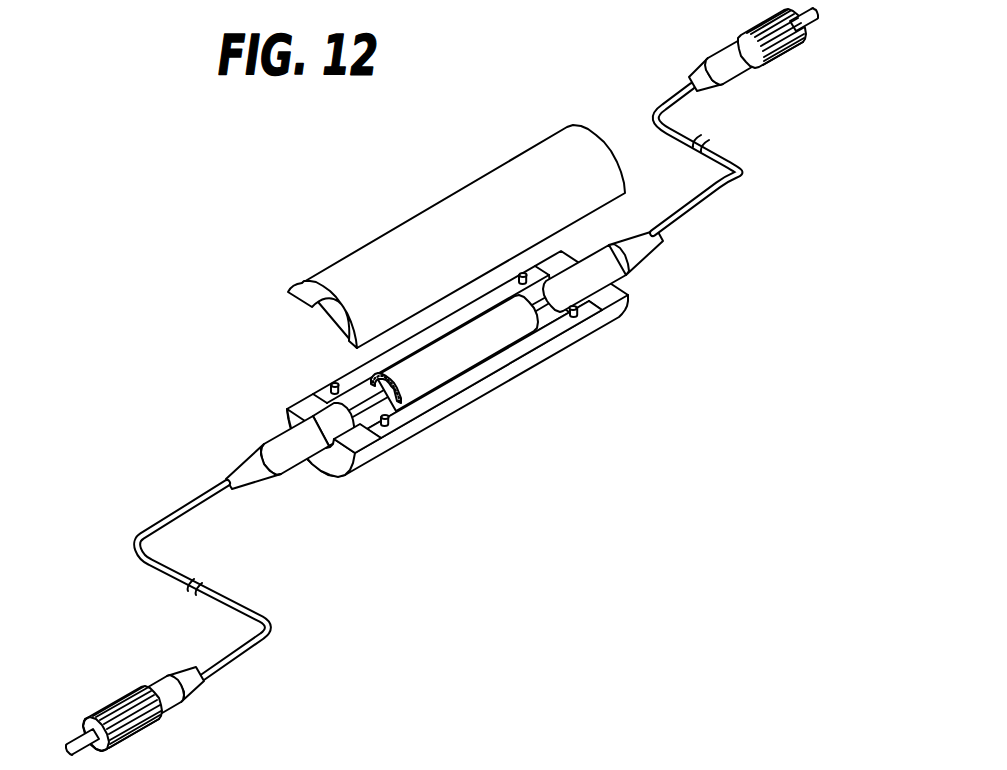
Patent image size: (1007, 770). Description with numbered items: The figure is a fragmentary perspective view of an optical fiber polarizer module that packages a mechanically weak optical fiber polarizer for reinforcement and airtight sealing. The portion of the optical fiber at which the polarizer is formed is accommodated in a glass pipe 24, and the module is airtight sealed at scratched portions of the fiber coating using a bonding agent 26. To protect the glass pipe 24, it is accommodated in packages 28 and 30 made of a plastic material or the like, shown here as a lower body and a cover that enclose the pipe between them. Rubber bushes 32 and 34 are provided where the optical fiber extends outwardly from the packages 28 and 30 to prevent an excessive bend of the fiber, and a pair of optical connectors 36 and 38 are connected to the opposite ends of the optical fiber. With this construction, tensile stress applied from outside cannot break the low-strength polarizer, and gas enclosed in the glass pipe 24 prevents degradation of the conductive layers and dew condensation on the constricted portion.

The glass pipe 24 is at (434, 370).
The bonding agent 26 is at (403, 417).
The package 28 is at (552, 357).
The package 30 is at (362, 272).
The rubber bush 32 is at (292, 464).
The rubber bush 34 is at (635, 257).
The optical connector 36 is at (118, 692).
The optical connector 38 is at (782, 64).